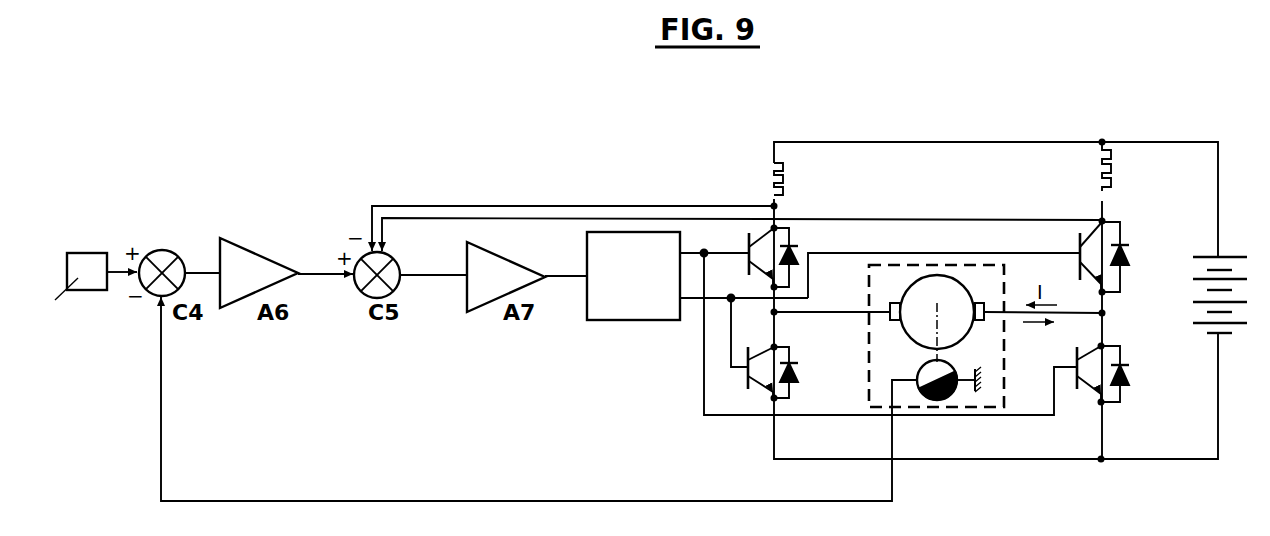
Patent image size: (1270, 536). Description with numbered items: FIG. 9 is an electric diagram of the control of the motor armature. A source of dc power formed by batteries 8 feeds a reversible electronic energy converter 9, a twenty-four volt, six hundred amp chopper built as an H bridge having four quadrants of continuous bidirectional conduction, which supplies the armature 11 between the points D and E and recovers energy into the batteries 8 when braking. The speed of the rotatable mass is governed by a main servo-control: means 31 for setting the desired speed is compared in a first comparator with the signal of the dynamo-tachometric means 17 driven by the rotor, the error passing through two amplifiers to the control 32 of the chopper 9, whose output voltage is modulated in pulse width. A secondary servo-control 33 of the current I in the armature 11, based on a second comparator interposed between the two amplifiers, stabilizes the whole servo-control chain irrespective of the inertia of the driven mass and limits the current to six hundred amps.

The means for setting the desired speed 31 is at (85, 253).
The secondary servo-control 33 is at (514, 202).
The control of the chopper 32 is at (613, 306).
The reversible electronic energy converter (chopper) 9 is at (924, 140).
The armature 11 is at (957, 293).
The dynamo-tachometric means 17 is at (920, 370).
The batteries 8 is at (1238, 337).